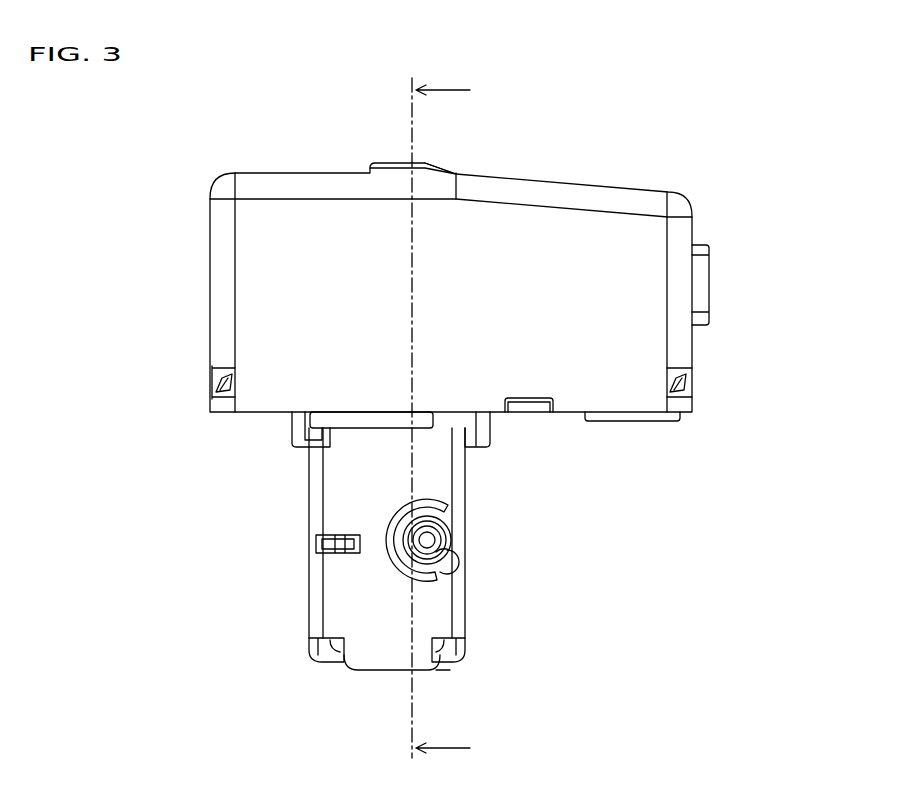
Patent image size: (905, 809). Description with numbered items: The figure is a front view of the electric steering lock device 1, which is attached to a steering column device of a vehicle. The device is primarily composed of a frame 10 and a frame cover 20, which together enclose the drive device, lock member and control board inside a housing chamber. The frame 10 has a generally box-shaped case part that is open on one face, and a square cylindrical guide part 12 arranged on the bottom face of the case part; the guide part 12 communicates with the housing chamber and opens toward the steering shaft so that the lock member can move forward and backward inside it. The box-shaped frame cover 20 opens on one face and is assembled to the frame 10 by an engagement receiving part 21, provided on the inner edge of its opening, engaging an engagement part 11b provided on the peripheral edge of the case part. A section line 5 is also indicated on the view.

The electric steering lock device 1 is at (457, 419).
The section line 5 is at (450, 420).
The frame 10 is at (402, 541).
The engagement part 11b is at (222, 378).
The guide part 12 is at (315, 500).
The frame cover 20 is at (606, 178).
The engagement receiving part 21 is at (220, 392).